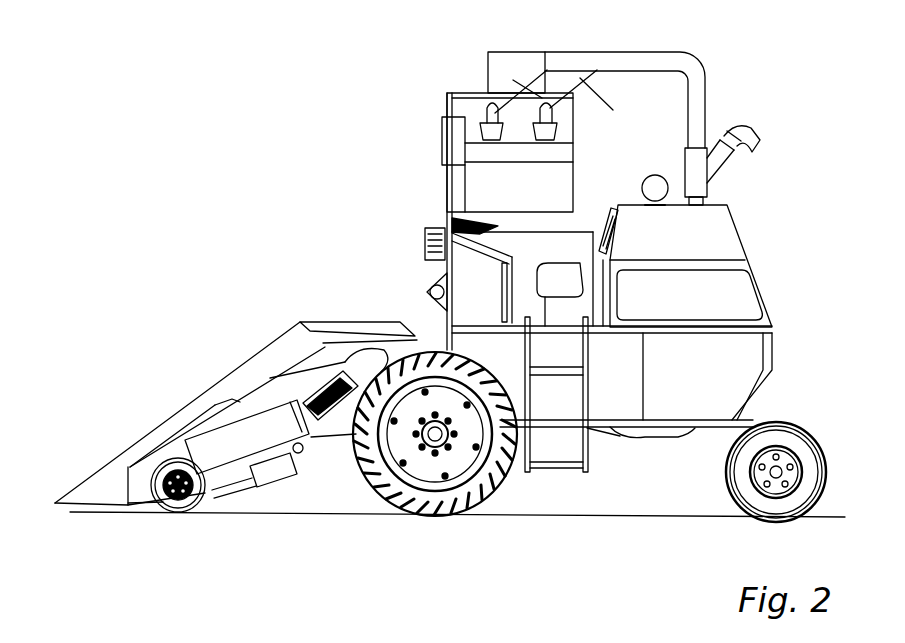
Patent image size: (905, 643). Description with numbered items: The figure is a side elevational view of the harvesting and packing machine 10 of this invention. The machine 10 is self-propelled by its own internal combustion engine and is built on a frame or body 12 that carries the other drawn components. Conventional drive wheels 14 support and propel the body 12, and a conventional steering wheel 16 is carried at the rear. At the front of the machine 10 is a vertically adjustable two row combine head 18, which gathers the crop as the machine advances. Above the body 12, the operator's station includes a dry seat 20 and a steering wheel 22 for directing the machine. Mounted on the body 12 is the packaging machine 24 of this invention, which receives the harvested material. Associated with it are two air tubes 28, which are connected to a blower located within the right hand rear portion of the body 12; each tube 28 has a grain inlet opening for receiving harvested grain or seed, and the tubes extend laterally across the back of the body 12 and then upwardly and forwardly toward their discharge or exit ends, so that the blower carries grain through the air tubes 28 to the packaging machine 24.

The harvesting and packing machine 10 is at (376, 304).
The frame or body 12 is at (772, 326).
The drive wheels 14 is at (418, 342).
The steering wheel 16 is at (784, 435).
The two row combine head 18 is at (340, 325).
The dry seat 20 is at (582, 293).
The steering wheel 22 is at (472, 216).
The packaging machine 24 is at (473, 150).
The air tubes 28 is at (580, 95).